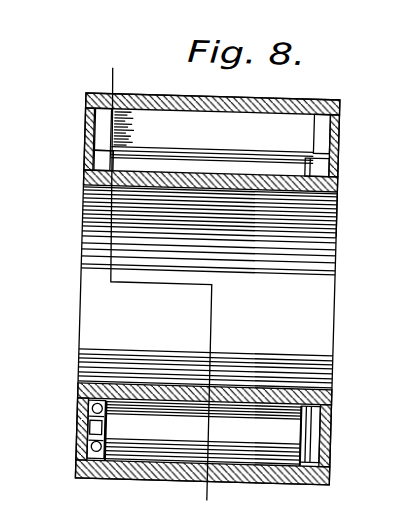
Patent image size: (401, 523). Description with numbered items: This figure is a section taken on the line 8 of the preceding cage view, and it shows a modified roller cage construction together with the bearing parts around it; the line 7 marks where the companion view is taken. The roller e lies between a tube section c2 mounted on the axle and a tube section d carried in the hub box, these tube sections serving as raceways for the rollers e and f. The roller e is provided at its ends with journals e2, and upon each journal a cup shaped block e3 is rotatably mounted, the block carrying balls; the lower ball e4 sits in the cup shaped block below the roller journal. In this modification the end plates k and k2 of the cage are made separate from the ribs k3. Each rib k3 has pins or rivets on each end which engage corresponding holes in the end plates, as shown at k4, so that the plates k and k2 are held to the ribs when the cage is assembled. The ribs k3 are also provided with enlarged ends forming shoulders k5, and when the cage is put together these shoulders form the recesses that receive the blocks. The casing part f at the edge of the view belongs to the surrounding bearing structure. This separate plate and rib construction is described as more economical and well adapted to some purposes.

The tube section d is at (268, 95).
The end plate k is at (87, 157).
The end plate k2 is at (340, 172).
The ribs k3 is at (212, 140).
The pins or rivets engaging holes k4 is at (90, 132).
The shoulders k5 is at (118, 131).
The tube section c2 is at (340, 186).
The roller f is at (368, 216).
The roller e is at (203, 433).
The journal e2 is at (112, 425).
The cup shaped block e3 is at (98, 408).
The lower bearing ball e4 is at (97, 447).
The section line 7 is at (110, 0).
The section line 8 is at (373, 0).